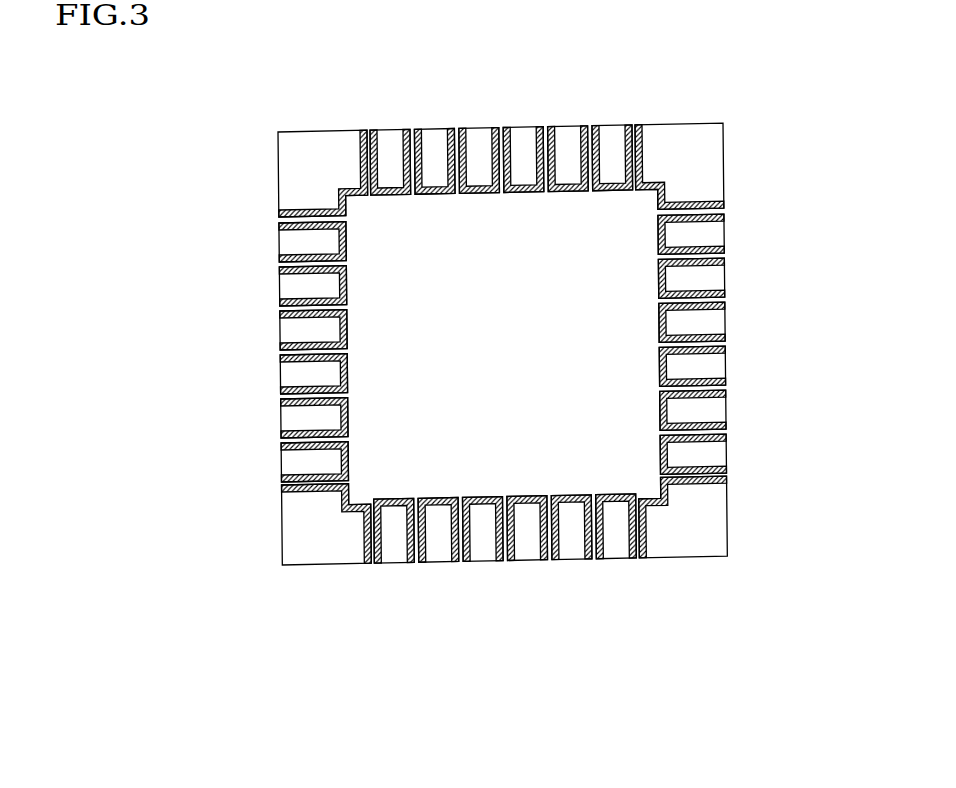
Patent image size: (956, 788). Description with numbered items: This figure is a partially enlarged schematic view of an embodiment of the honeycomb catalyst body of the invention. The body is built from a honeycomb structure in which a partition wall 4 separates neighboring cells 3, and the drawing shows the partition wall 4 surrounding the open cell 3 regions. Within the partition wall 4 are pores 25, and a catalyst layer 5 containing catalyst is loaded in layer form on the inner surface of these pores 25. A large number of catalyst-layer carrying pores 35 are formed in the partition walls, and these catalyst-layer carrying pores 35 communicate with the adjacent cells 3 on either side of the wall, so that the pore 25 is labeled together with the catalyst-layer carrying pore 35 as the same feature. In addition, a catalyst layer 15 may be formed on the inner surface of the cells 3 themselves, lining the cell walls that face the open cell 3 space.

The cell 3 is at (622, 235).
The partition wall 4 is at (477, 150).
The catalyst layer 5 is at (697, 373).
The catalyst layer 15 is at (337, 238).
The catalyst-layer carrying pore 35 is at (307, 360).
The pore 25 is at (310, 435).